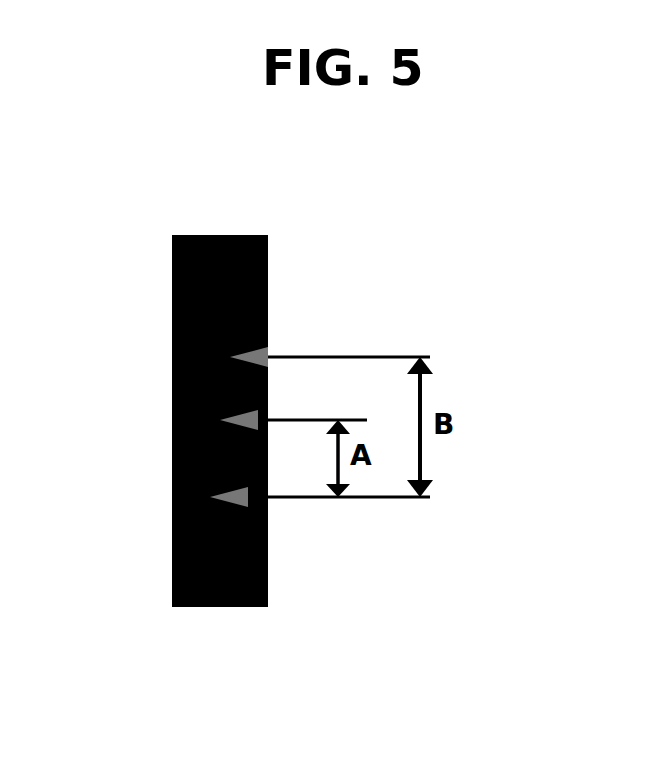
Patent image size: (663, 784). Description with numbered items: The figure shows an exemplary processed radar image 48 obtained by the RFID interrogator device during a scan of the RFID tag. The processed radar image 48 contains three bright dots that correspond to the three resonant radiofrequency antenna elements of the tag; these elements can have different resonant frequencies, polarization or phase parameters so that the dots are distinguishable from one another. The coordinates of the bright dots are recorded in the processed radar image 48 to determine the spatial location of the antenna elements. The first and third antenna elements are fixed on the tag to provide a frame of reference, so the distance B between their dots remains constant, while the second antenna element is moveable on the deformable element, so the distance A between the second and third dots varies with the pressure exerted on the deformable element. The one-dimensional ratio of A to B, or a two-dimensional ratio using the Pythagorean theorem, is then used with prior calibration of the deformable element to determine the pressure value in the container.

The processed radar image 48 is at (163, 421).